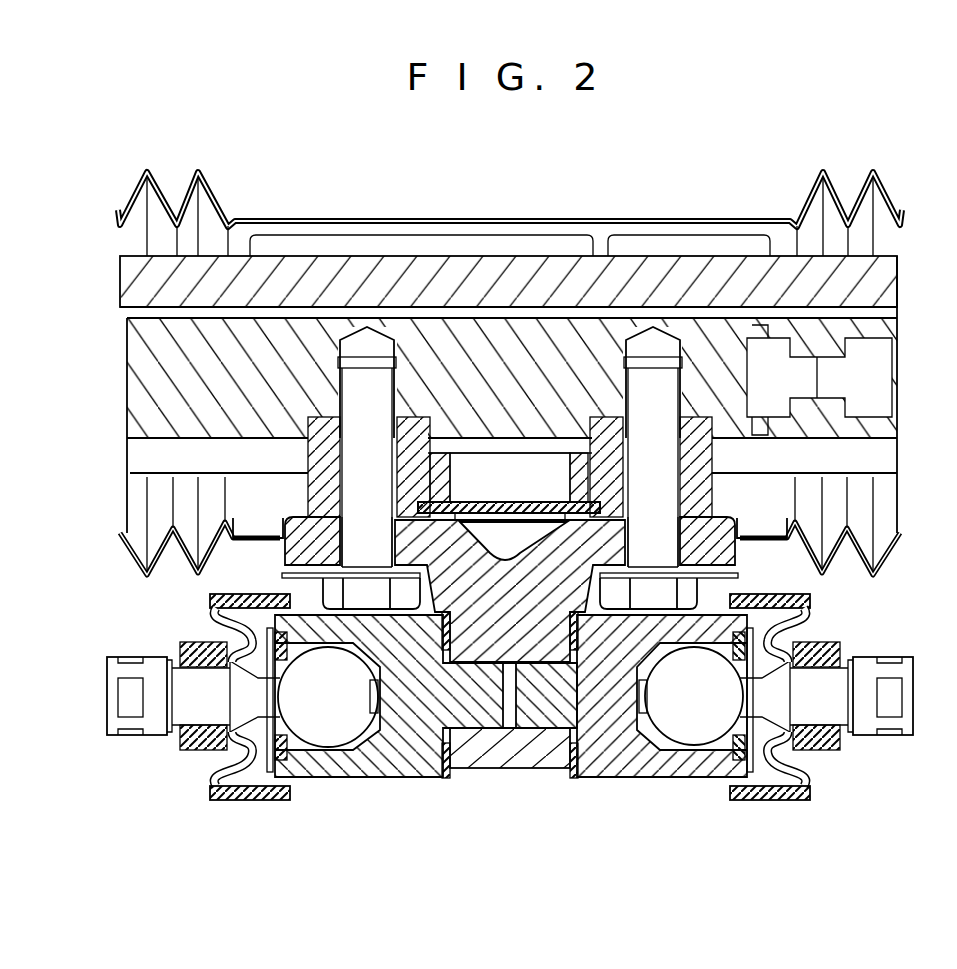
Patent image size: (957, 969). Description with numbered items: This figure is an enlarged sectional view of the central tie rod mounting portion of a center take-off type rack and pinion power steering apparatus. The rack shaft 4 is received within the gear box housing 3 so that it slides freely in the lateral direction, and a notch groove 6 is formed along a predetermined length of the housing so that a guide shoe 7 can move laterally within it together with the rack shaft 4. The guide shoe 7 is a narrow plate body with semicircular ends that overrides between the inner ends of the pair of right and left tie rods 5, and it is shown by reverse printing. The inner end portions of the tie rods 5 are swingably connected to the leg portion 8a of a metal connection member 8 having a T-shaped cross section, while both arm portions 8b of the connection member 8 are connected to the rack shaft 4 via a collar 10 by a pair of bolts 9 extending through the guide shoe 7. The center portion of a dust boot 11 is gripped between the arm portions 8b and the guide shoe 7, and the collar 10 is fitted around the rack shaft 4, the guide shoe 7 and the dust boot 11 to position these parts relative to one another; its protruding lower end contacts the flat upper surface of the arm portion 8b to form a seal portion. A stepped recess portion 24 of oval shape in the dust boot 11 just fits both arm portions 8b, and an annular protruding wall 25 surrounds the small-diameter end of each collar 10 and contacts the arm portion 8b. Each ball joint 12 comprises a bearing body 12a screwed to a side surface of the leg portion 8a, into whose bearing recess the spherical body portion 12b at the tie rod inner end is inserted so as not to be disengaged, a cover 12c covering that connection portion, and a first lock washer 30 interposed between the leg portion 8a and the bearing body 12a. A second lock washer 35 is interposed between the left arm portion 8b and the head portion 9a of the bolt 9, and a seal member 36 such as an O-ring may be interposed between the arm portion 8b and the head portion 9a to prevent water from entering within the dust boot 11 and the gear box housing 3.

The gear box housing 3 is at (553, 267).
The rack shaft 4 is at (147, 383).
The tie rod 5 is at (108, 740).
The notch groove 6 is at (147, 458).
The guide shoe 7 is at (482, 455).
The connection member 8 is at (492, 776).
The leg portion 8a is at (525, 765).
The arm portion 8b is at (305, 549).
The bolt 9 is at (367, 390).
The head portion 9a is at (360, 595).
The collar 10 is at (324, 417).
The dust boot 11 is at (875, 178).
The ball joint 12 is at (265, 805).
The bearing body 12a is at (403, 767).
The spherical body portion 12b is at (330, 737).
The cover 12c is at (215, 800).
The stepped recess portion 24 is at (735, 540).
The annular protruding wall 25 is at (420, 535).
The first lock washer 30 is at (447, 780).
The second lock washer 35 is at (280, 577).
The seal member 36 is at (373, 568).